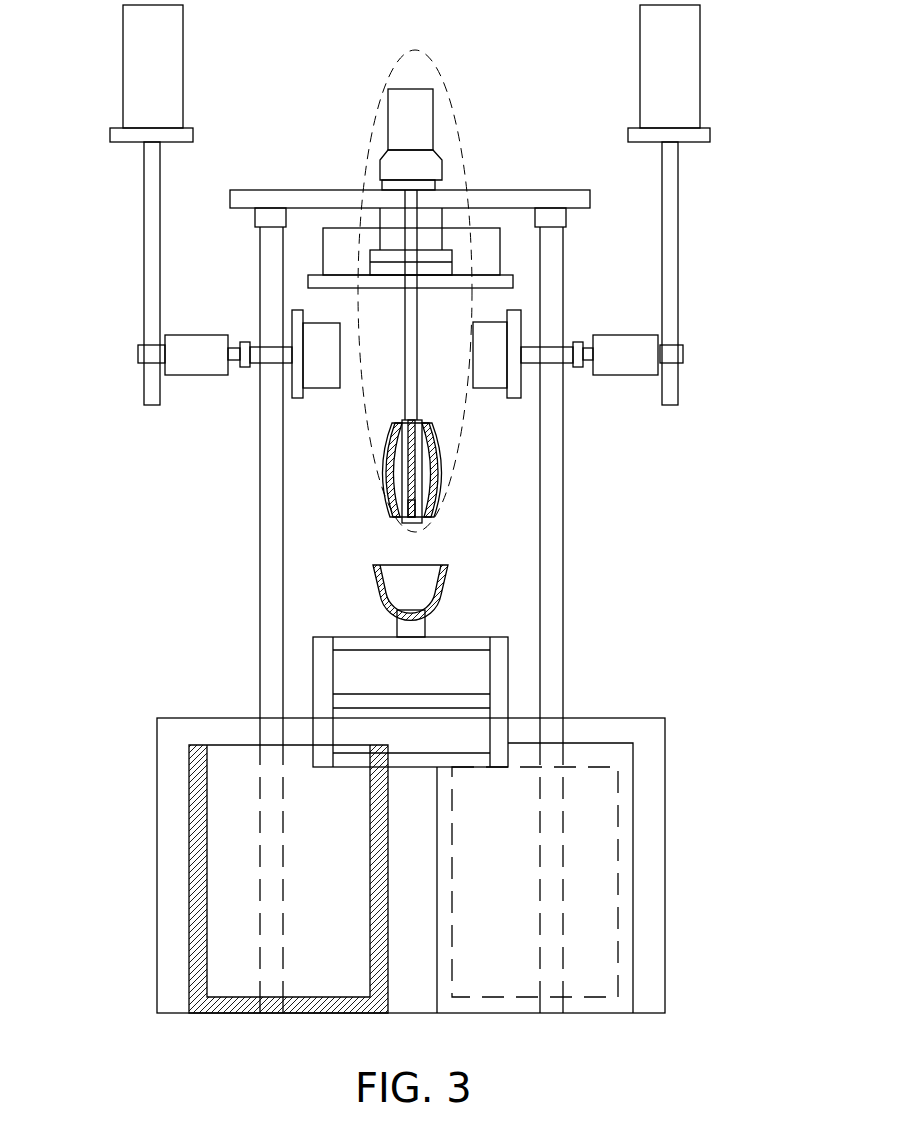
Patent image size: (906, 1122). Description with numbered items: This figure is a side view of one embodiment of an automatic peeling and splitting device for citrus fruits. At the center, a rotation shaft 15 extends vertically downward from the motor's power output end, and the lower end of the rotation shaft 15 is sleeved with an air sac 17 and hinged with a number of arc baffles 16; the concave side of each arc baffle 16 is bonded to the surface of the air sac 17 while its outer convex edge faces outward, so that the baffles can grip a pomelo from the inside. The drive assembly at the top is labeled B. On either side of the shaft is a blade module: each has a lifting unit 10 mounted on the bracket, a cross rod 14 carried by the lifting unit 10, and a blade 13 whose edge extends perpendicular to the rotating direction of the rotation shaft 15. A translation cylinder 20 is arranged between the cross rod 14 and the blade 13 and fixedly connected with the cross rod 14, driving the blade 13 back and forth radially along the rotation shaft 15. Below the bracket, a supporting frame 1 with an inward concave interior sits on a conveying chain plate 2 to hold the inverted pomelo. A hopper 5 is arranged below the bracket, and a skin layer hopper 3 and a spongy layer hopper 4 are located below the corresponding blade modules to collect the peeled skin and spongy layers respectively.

The supporting frame 1 is at (432, 580).
The conveying chain plate 2 is at (478, 672).
The skin layer hopper 3 is at (215, 935).
The spongy layer hopper 4 is at (598, 870).
The hopper 5 is at (657, 765).
The lifting unit 10 is at (140, 88).
The blade 13 is at (315, 340).
The cross rod 14 is at (272, 357).
The rotation shaft 15 is at (402, 383).
The arc baffle 16 is at (434, 477).
The air sac 17 is at (398, 468).
The translation cylinder 20 is at (183, 348).
The drive unit B is at (443, 120).